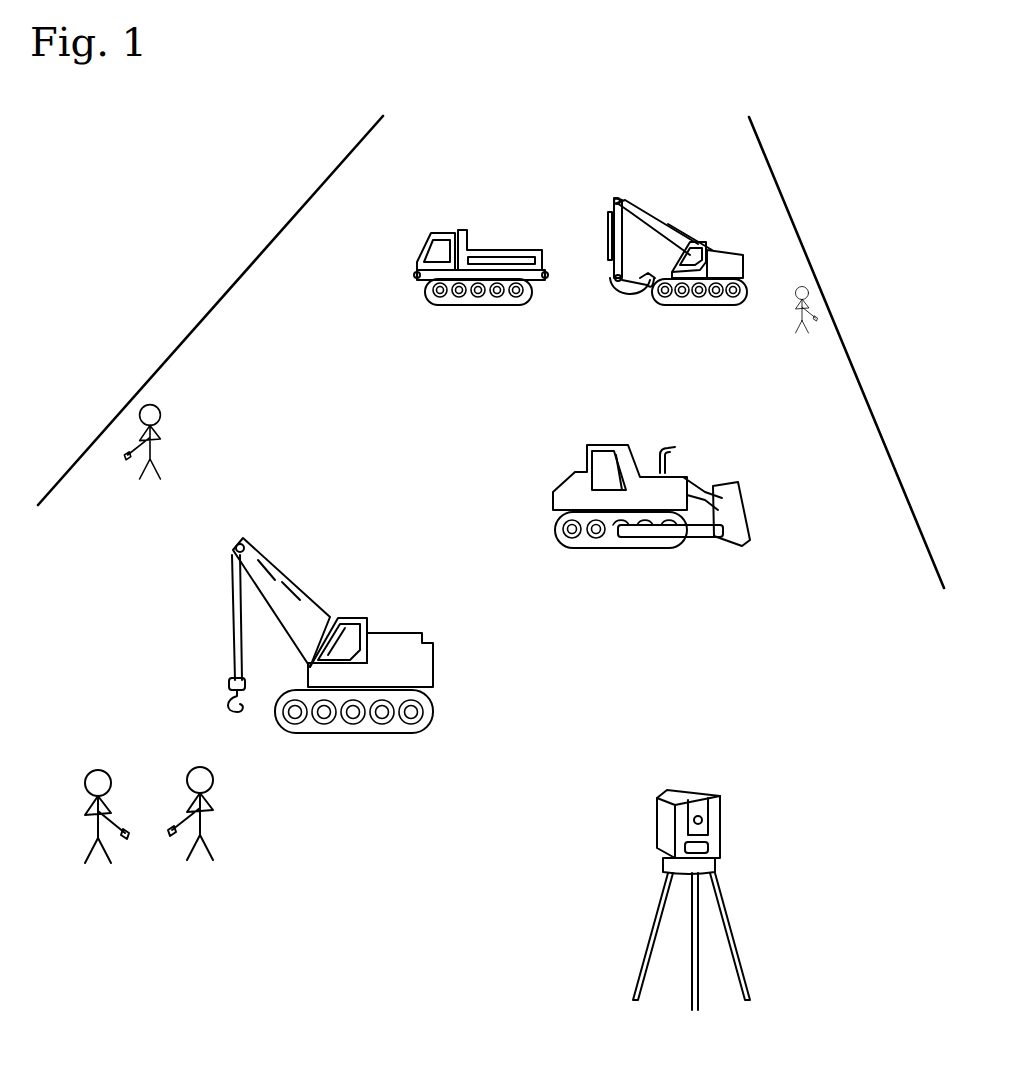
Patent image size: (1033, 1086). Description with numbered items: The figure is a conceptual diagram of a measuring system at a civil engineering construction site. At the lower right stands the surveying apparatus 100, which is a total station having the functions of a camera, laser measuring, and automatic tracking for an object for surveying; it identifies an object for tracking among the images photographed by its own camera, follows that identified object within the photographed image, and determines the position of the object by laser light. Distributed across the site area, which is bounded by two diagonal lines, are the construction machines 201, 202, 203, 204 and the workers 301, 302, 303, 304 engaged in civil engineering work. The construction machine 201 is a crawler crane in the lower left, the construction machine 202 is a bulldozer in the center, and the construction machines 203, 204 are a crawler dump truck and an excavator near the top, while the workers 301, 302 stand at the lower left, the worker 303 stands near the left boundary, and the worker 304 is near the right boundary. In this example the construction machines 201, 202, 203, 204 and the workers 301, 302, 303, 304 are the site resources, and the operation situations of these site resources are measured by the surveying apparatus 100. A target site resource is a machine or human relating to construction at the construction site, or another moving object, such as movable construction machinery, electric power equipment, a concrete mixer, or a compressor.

The surveying apparatus 100 is at (735, 830).
The construction machine 201 is at (430, 648).
The construction machine 202 is at (557, 505).
The construction machine 203 is at (488, 249).
The construction machine 204 is at (714, 250).
The worker 301 is at (208, 802).
The worker 302 is at (95, 853).
The worker 303 is at (160, 433).
The worker 304 is at (793, 327).